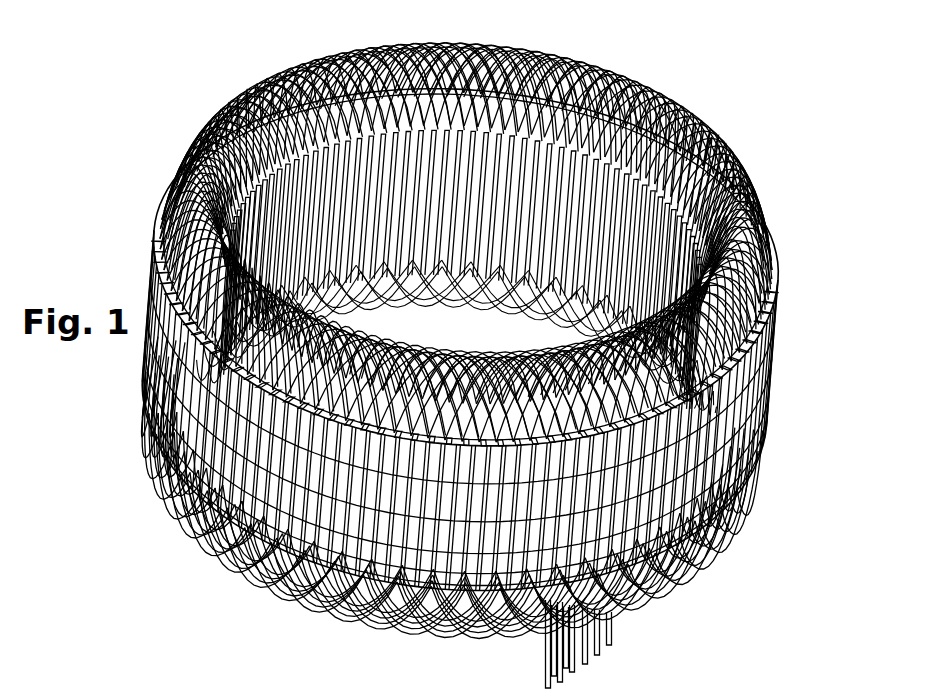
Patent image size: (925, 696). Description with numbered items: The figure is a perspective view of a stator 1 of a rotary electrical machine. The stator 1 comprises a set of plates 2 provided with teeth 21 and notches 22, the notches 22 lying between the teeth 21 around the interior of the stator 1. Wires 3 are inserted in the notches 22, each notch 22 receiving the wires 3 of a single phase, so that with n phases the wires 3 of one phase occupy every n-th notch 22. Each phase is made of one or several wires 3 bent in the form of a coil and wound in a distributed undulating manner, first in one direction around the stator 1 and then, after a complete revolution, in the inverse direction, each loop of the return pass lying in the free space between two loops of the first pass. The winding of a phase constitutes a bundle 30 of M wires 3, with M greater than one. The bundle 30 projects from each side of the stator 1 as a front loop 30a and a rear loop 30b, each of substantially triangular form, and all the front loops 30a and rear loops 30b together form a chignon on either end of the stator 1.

The stator 1 is at (661, 50).
The set of plates 2 is at (782, 313).
The wires 3 is at (741, 172).
The teeth 21 is at (244, 567).
The notches 22 is at (342, 391).
The bundle 30 is at (219, 695).
The front loop 30a is at (484, 641).
The rear loop 30b is at (442, 365).